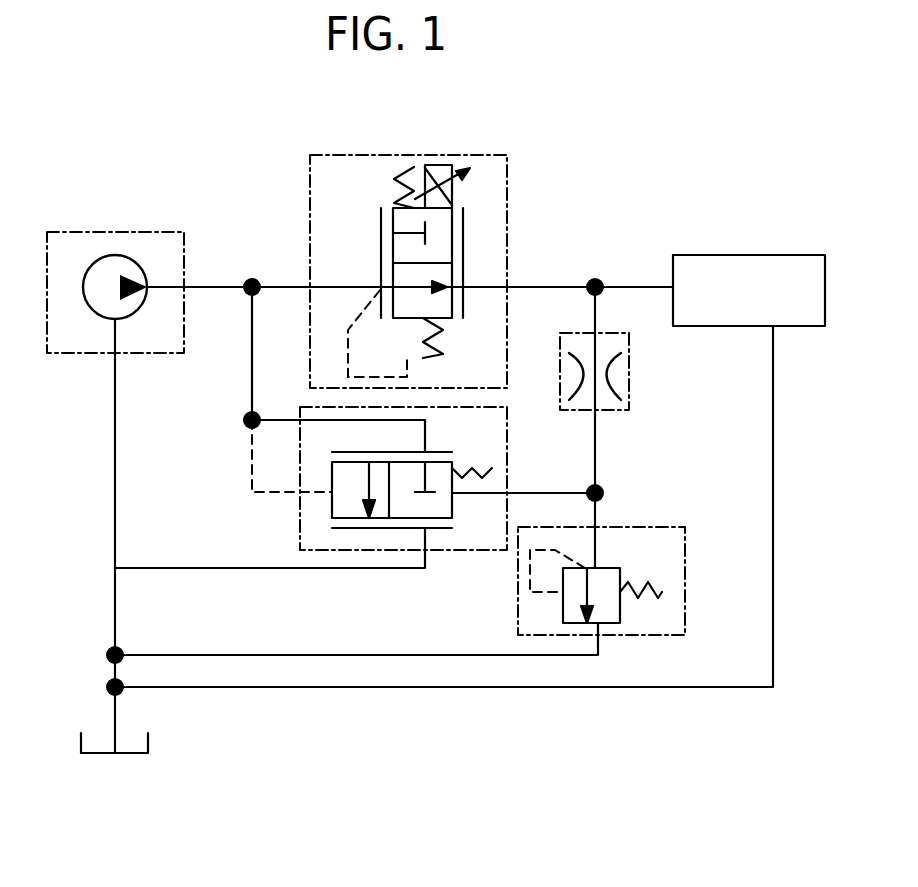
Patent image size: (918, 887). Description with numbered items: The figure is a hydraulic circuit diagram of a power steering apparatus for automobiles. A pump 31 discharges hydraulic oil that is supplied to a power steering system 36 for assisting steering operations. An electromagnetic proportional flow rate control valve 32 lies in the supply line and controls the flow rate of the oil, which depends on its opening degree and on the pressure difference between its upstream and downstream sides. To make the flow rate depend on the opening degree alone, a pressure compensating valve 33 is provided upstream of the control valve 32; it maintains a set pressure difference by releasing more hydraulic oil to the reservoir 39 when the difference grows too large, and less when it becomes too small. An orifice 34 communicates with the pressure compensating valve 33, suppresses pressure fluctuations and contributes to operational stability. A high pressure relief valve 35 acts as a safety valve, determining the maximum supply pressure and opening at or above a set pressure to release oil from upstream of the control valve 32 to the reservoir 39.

The pump 31 is at (115, 255).
The electromagnetic proportional flow rate control valve 32 is at (507, 187).
The pressure compensating valve 33 is at (452, 551).
The orifice 34 is at (629, 367).
The high pressure relief valve 35 is at (678, 527).
The power steering system 36 is at (773, 255).
The reservoir 39 is at (148, 745).